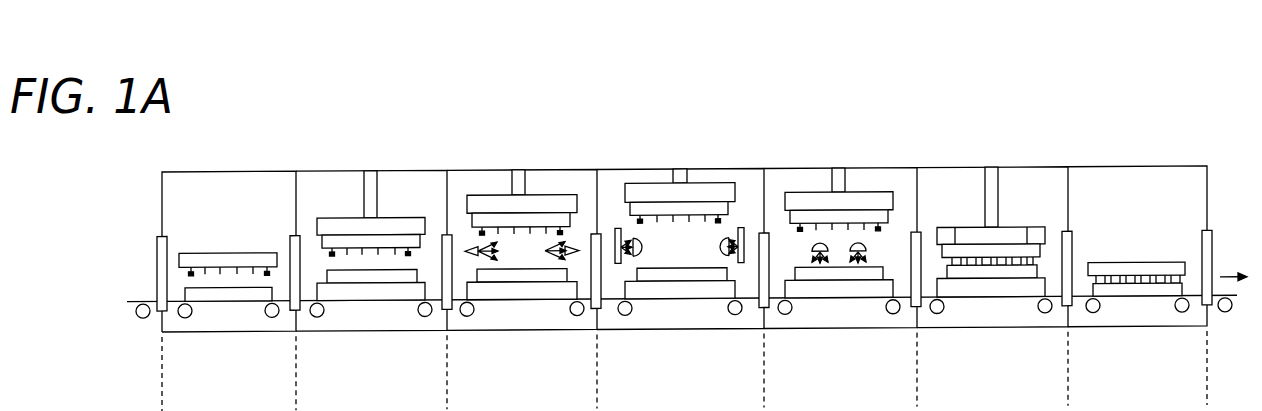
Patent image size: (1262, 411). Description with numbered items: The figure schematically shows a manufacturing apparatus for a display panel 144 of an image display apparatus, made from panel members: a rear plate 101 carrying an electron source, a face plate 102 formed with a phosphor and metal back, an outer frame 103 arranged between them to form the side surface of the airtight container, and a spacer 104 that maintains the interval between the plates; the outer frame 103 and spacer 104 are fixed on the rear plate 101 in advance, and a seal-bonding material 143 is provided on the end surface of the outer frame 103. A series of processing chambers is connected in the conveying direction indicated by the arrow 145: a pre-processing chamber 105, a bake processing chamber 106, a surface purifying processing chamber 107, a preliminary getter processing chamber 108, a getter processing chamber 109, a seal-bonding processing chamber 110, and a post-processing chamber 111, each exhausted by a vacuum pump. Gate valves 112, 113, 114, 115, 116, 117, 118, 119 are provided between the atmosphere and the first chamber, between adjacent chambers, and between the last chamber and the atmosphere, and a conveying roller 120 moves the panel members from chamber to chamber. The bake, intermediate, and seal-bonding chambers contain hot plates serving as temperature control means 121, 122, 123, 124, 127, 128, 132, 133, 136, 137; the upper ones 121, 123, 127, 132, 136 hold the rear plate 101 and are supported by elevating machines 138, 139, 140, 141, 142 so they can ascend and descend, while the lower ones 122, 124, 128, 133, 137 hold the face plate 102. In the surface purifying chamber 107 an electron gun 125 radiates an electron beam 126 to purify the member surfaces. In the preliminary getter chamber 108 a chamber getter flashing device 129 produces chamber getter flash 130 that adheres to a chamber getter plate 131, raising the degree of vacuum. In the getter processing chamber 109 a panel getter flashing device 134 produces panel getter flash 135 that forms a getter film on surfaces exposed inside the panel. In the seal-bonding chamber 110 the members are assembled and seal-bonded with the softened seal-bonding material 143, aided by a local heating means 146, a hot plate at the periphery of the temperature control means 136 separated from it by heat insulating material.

The rear plate 101 is at (248, 260).
The face plate 102 is at (210, 298).
The outer frame 103 is at (189, 272).
The spacer 104 is at (213, 268).
The pre-processing chamber 105 is at (172, 172).
The bake processing chamber 106 is at (355, 172).
The surface purifying processing chamber 107 is at (503, 172).
The preliminary getter processing chamber 108 is at (662, 173).
The getter processing chamber 109 is at (820, 173).
The seal-bonding processing chamber 110 is at (972, 172).
The post-processing chamber 111 is at (1130, 172).
The gate valve 112 is at (162, 254).
The gate valve 113 is at (290, 309).
The gate valve 114 is at (445, 304).
The gate valve 115 is at (595, 305).
The gate valve 116 is at (760, 310).
The gate valve 117 is at (910, 311).
The gate valve 118 is at (1063, 312).
The gate valve 119 is at (1207, 312).
The conveying roller 120 is at (145, 319).
The temperature control means 121 is at (340, 224).
The temperature control means 122 is at (368, 296).
The temperature control means 123 is at (487, 205).
The temperature control means 124 is at (530, 294).
The electron gun 125 is at (472, 256).
The electron beam 126 is at (492, 251).
The temperature control means 127 is at (642, 195).
The temperature control means 128 is at (695, 294).
The chamber getter flashing device 129 is at (642, 250).
The chamber getter flash 130 is at (629, 258).
The chamber getter plate 131 is at (618, 267).
The temperature control means 132 is at (802, 204).
The temperature control means 133 is at (855, 296).
The panel getter flashing device 134 is at (810, 249).
The panel getter flash 135 is at (818, 268).
The temperature control means 136 is at (1010, 240).
The temperature control means 137 is at (983, 296).
The elevating machine 138 is at (372, 191).
The elevating machine 139 is at (522, 189).
The elevating machine 140 is at (682, 181).
The elevating machine 141 is at (840, 182).
The elevating machine 142 is at (990, 185).
The seal-bonding material 143 is at (188, 276).
The display panel 144 is at (1148, 272).
The arrow 145 is at (1222, 280).
The local heating means 146 is at (945, 240).